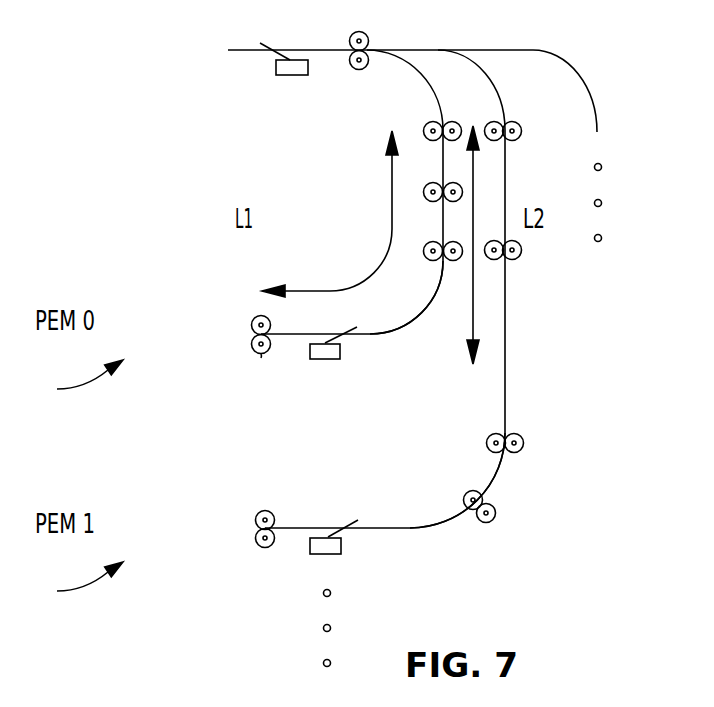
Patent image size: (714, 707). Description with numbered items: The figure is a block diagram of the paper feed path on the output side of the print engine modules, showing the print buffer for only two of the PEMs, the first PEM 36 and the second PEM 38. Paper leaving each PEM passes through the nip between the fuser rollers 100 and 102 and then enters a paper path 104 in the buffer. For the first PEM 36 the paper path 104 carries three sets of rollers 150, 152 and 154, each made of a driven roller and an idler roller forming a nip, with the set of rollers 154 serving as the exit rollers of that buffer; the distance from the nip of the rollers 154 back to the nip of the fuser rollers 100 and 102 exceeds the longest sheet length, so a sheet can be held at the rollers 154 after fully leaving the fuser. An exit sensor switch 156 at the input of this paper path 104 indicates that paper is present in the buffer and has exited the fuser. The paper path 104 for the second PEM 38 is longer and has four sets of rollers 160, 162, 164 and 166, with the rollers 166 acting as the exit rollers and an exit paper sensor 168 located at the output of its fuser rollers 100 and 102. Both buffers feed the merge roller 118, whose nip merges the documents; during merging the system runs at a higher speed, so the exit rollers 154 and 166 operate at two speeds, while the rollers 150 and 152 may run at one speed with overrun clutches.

The merge roller 118 is at (366, 37).
The exit set of rollers 154 is at (428, 123).
The set of rollers 152 is at (427, 186).
The set of rollers 150 is at (427, 245).
The exit rollers 166 is at (519, 136).
The rollers 164 is at (520, 253).
The rollers 162 is at (524, 440).
The rollers 160 is at (491, 517).
The fuser roller 100 is at (256, 318).
The fuser roller 102 is at (259, 355).
The paper path 104 is at (395, 323).
The exit sensor switch 156 is at (325, 355).
The exit paper sensor 168 is at (330, 545).
The first PEM 36 is at (90, 398).
The second PEM 38 is at (90, 600).